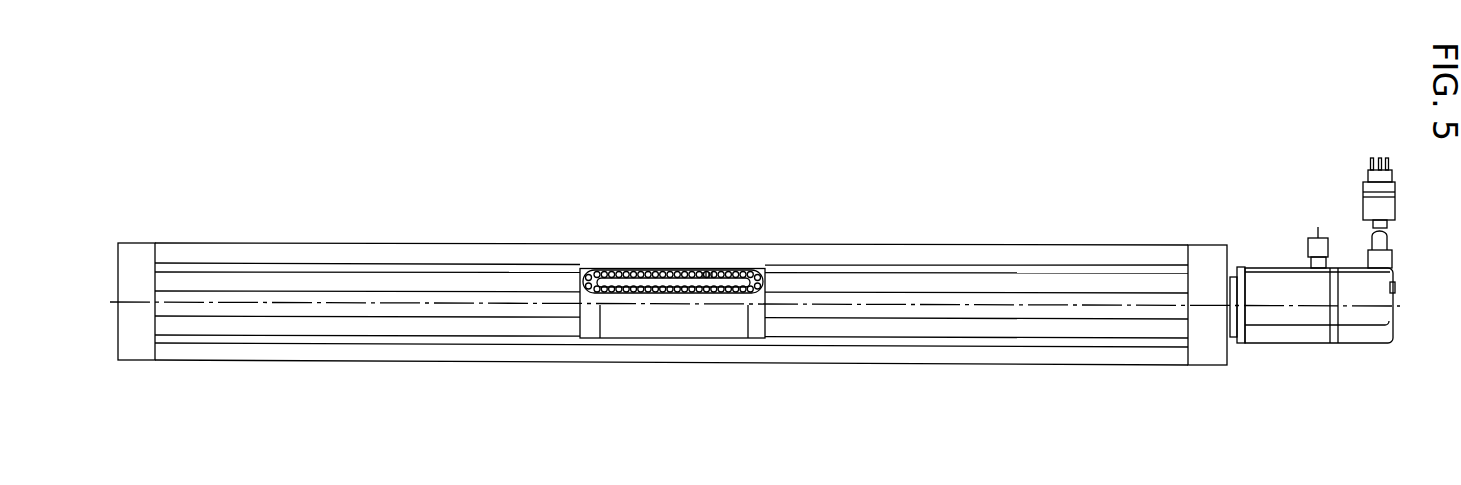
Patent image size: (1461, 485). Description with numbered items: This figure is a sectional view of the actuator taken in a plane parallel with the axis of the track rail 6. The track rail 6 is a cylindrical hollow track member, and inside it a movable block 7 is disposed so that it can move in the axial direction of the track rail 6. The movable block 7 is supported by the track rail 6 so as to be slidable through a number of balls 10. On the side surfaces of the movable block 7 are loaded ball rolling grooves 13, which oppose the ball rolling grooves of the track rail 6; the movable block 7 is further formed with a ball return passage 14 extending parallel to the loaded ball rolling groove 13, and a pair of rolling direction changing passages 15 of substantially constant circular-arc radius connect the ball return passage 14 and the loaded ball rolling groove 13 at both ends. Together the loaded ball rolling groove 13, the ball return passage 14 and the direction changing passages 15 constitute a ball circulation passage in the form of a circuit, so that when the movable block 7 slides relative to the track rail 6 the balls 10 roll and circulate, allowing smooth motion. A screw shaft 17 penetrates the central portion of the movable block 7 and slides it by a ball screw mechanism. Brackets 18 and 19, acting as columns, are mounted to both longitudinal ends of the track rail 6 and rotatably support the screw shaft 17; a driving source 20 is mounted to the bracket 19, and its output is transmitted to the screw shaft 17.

The track rail 6 is at (947, 252).
The movable block 7 is at (671, 325).
The balls 10 is at (692, 272).
The loaded ball rolling groove 13 is at (712, 276).
The ball return passage 14 is at (670, 290).
The rolling direction changing passage 15 is at (583, 272).
The screw shaft 17 is at (1017, 297).
The bracket 18 is at (148, 352).
The bracket 19 is at (1210, 355).
The driving source 20 is at (1294, 330).